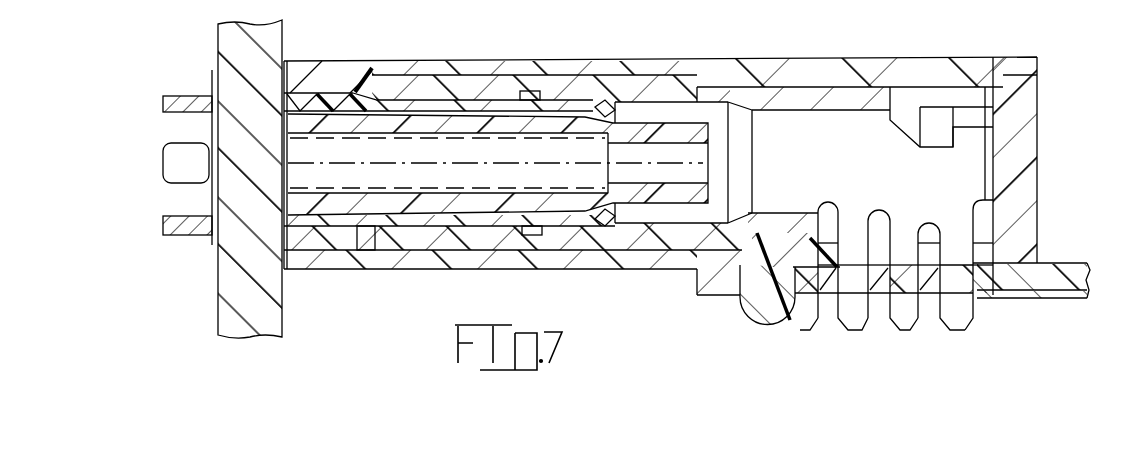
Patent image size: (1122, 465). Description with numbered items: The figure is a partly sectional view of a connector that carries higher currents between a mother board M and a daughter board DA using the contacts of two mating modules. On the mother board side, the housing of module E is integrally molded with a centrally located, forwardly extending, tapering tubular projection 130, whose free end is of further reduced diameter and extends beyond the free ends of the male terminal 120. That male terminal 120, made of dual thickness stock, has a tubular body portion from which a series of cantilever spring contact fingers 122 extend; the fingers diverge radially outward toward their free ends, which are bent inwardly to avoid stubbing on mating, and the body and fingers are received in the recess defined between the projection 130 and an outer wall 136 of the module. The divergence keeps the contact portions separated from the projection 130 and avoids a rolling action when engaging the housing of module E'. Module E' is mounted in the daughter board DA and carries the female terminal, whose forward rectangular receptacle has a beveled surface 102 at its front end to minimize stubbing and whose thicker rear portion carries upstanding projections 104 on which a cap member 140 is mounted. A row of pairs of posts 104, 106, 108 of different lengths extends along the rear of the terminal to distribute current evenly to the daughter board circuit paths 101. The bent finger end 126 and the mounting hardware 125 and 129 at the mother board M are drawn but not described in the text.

The mother board M is at (284, 47).
The mounting pin 125 is at (212, 72).
The mounting nut 129 is at (186, 237).
The module E is at (660, 171).
The module E' is at (867, 105).
The male terminal 120 is at (356, 90).
The cantilever spring contact fingers 122 is at (530, 104).
The contact tab 126 is at (602, 105).
The tubular projection 130 is at (565, 198).
The beveled surface 102 is at (378, 228).
The outer wall 136 is at (502, 256).
The daughter board DA is at (716, 283).
The upstanding projections 104 is at (967, 133).
The cap member 140 is at (1027, 165).
The daughter board circuit paths 101 is at (1077, 297).
The posts 108 is at (851, 321).
The posts 106 is at (905, 325).